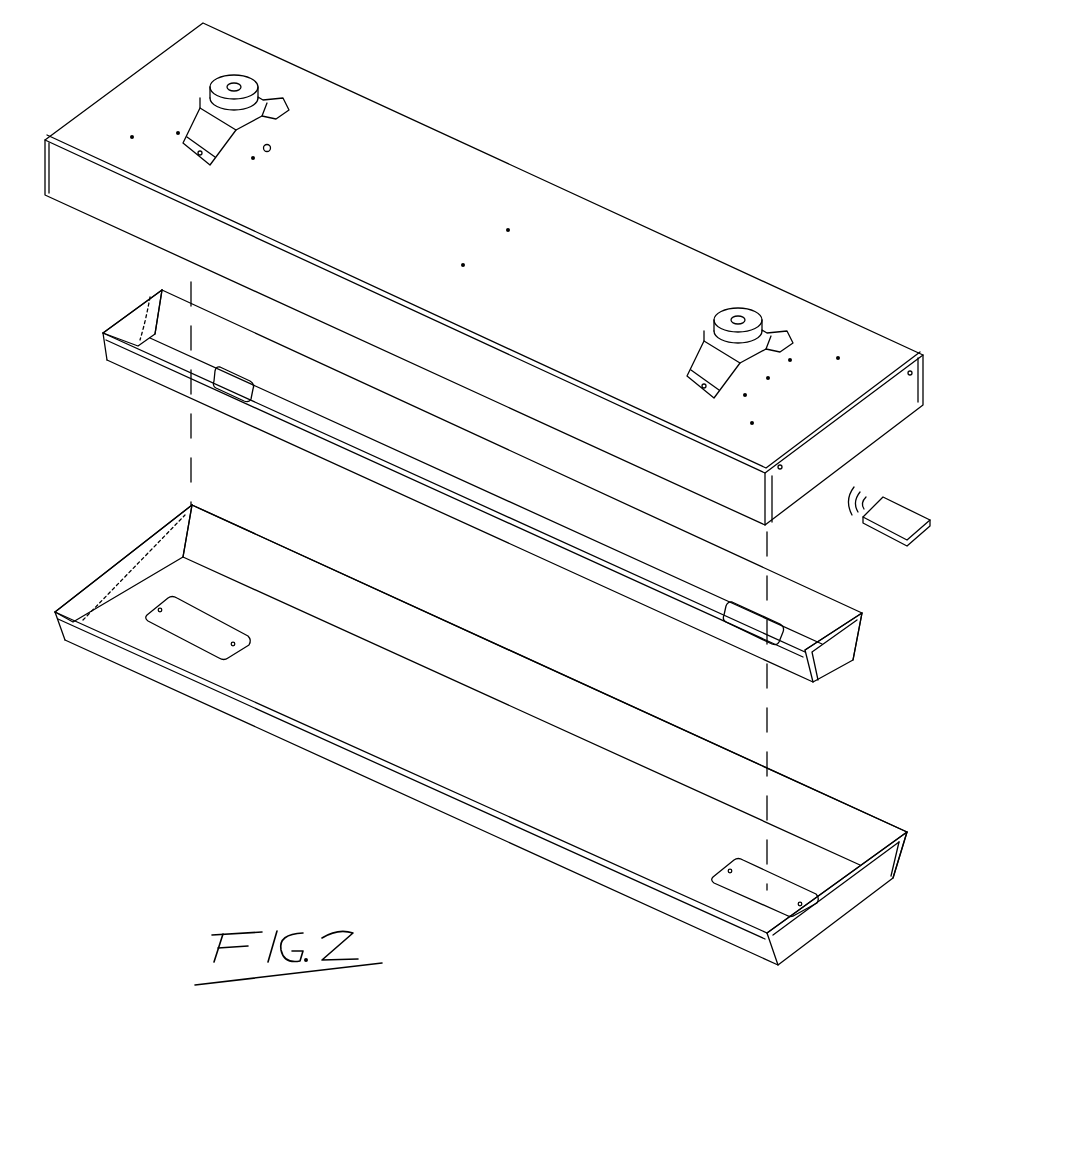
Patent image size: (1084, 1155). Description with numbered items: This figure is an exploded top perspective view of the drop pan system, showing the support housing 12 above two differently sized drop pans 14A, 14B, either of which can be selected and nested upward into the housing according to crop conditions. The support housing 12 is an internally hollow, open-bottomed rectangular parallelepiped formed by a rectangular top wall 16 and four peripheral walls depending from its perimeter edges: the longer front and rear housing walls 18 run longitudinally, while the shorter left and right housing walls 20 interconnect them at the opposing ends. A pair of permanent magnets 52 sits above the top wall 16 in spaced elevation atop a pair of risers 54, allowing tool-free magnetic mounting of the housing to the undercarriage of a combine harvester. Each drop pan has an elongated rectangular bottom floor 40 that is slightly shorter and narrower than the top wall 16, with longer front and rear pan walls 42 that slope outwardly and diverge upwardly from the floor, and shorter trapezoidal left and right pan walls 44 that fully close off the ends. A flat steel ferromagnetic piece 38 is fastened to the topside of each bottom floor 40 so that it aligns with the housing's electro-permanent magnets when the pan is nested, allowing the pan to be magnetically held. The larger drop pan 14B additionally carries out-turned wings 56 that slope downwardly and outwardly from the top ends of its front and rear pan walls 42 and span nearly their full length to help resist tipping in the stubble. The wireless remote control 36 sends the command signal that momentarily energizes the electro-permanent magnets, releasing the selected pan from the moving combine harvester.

The support housing 12 is at (484, 270).
The drop pan 14A is at (878, 602).
The drop pan 14B is at (872, 797).
The top wall 16 is at (550, 205).
The front and rear housing walls 18 is at (96, 205).
The left and right housing walls 20 is at (855, 446).
The wireless remote control 36 is at (895, 513).
The ferromagnetic piece 38 is at (218, 377).
The bottom floor 40 is at (499, 627).
The front and rear pan walls 42 is at (820, 610).
The left and right pan walls 44 is at (133, 317).
The permanent magnets 52 is at (245, 86).
The risers 54 is at (200, 130).
The out-turned wings 56 is at (477, 801).